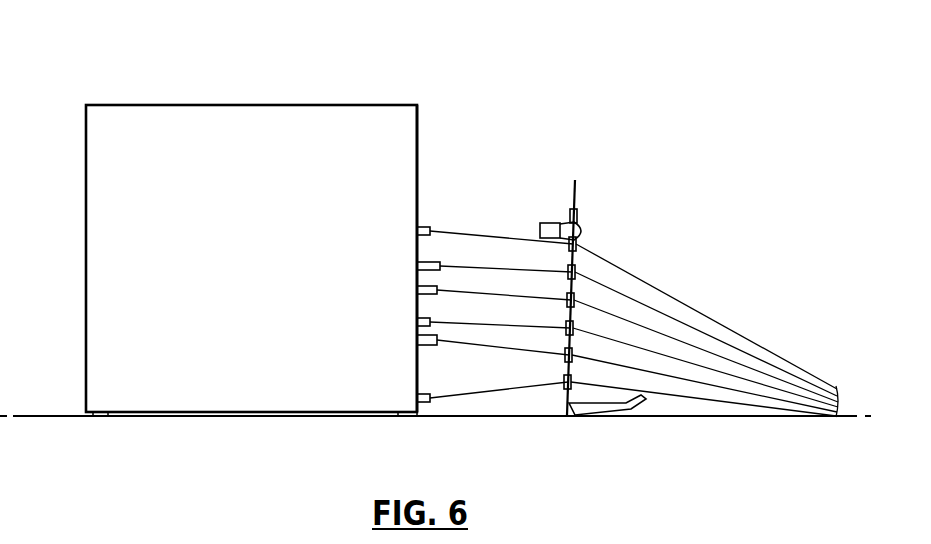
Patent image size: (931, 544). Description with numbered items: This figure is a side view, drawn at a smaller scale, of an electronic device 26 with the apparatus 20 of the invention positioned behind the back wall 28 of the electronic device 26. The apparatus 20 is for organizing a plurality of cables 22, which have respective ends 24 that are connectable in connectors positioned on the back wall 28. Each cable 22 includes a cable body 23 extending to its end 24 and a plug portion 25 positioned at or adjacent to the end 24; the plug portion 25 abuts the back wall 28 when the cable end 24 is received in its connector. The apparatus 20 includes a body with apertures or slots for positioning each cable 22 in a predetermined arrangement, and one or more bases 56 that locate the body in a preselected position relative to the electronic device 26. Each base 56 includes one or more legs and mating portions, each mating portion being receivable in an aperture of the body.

The apparatus 20 is at (575, 182).
The cables 22 is at (628, 273).
The cable body 23 is at (505, 239).
The ends 24 is at (424, 222).
The plug portion 25 is at (432, 238).
The electronic device 26 is at (344, 106).
The back wall 28 is at (419, 143).
The base 56 is at (608, 417).